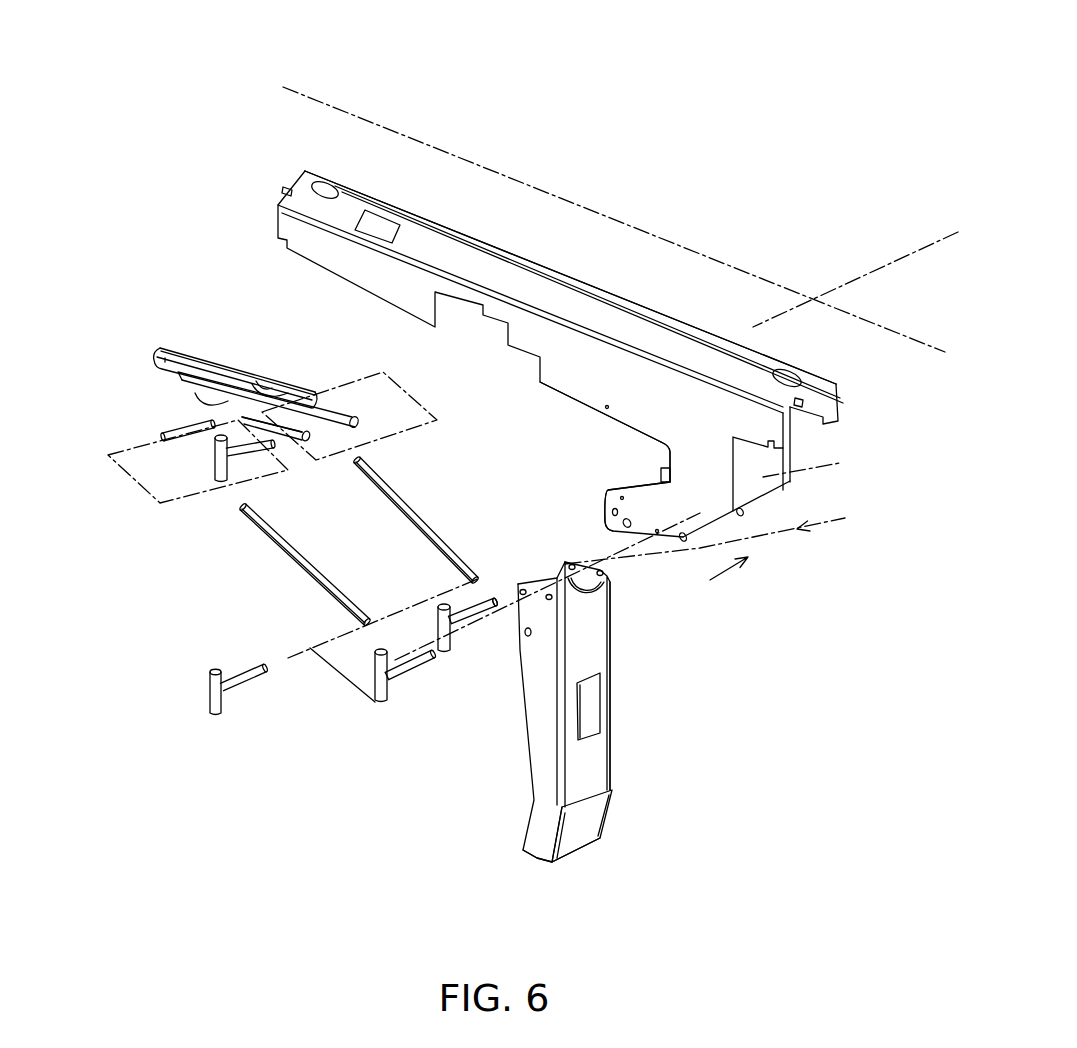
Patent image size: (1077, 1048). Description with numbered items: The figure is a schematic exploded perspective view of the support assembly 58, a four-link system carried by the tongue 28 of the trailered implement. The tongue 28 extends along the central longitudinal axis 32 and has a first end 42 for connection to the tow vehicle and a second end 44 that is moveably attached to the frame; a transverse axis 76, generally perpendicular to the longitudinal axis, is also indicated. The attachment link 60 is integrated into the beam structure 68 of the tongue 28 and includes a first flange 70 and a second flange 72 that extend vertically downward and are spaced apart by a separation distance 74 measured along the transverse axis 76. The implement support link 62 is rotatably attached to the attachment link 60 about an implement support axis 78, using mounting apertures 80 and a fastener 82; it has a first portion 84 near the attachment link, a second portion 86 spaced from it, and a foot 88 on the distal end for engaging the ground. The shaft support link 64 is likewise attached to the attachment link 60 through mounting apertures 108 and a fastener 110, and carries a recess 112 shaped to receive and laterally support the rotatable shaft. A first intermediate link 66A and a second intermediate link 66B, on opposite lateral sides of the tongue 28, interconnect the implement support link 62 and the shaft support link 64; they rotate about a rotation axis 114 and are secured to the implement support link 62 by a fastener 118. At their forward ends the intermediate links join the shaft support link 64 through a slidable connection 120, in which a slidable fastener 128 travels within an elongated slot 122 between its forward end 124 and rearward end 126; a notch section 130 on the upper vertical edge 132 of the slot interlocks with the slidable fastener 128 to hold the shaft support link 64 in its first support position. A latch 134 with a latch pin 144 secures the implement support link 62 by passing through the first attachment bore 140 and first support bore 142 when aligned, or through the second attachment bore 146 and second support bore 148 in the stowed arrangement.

The tongue 28 is at (691, 209).
The central longitudinal axis 32 is at (395, 125).
The first end 42 is at (287, 182).
The second end 44 is at (838, 390).
The support assembly 58 is at (247, 729).
The attachment link 60 is at (735, 518).
The implement support link 62 is at (600, 753).
The shaft support link 64 is at (202, 345).
The first intermediate link 66A is at (297, 562).
The second intermediate link 66B is at (412, 510).
The beam structure 68 is at (583, 363).
The first flange 70 is at (650, 503).
The second flange 72 is at (793, 490).
The separation distance 74 is at (812, 522).
The transverse axis 76 is at (863, 270).
The implement support axis 78 is at (443, 652).
The mounting apertures 80 is at (495, 600).
The fastener 82 is at (462, 600).
The first portion 84 is at (613, 692).
The second portion 86 is at (588, 810).
The foot 88 is at (572, 858).
The mounting apertures 108 is at (306, 442).
The fastener 110 is at (220, 478).
The recess 112 is at (187, 340).
The rotation axis 114 is at (297, 653).
The fastener 118 is at (210, 713).
The slidable connection 120 is at (163, 397).
The elongated slot 122 is at (295, 395).
The forward end 124 is at (157, 366).
The rearward end 126 is at (360, 395).
The slidable fastener 128 is at (163, 433).
The notch section 130 is at (288, 392).
The upper vertical edge 132 is at (237, 382).
The latch 134 is at (395, 698).
The first attachment bore 140 is at (683, 541).
The first support bore 142 is at (555, 599).
The latch pin 144 is at (420, 683).
The second attachment bore 146 is at (620, 525).
The second support bore 148 is at (528, 640).